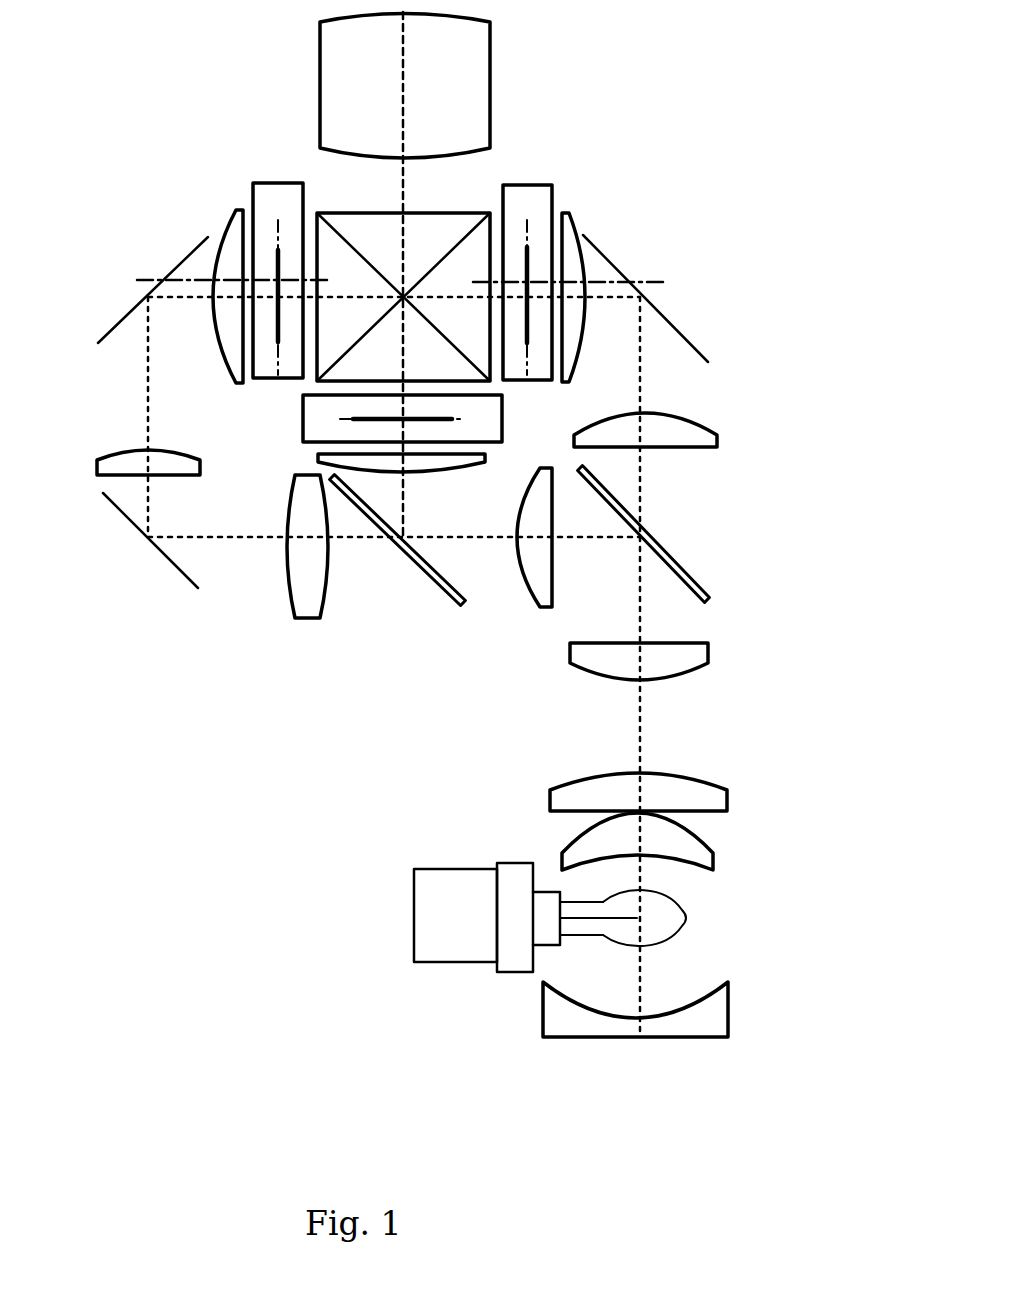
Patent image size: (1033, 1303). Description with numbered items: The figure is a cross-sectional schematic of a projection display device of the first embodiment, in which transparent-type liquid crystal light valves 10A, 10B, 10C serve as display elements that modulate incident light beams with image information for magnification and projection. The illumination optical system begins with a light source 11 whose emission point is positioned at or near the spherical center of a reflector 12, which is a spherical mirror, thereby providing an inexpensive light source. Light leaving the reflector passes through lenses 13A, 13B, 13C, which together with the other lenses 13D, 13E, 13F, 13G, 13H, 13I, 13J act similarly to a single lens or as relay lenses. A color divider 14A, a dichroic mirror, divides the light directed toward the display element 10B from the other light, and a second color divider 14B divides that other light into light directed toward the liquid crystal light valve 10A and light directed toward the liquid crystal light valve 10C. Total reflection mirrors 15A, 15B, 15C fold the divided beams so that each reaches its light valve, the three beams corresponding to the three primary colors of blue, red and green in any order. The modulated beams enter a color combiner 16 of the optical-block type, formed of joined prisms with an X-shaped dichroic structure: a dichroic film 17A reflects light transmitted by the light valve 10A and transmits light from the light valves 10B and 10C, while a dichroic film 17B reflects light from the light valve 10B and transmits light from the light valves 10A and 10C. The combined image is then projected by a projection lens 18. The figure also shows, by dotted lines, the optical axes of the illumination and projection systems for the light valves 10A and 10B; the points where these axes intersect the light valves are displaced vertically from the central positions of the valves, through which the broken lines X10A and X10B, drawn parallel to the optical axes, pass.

The projection lens 18 is at (485, 85).
The color combiner 16 is at (386, 232).
The dichroic film 17A is at (458, 235).
The dichroic film 17B is at (343, 234).
The transparent-type liquid crystal light valve 10A is at (288, 183).
The transparent-type liquid crystal light valve 10B is at (528, 185).
The transparent-type liquid crystal light valve 10C is at (303, 420).
The lens 13J is at (238, 210).
The lens 13E is at (570, 213).
The broken line through center of light valve 10A X10A is at (150, 280).
The broken line through center of light valve 10B X10B is at (645, 280).
The total reflection mirror 15A is at (680, 332).
The total reflection mirror 15B is at (165, 560).
The total reflection mirror 15C is at (112, 332).
The lens 13I is at (125, 455).
The lens 13D is at (697, 432).
The lens 13G is at (318, 460).
The lens 13H is at (305, 598).
The lens 13F is at (525, 593).
The lens 13C is at (700, 662).
The lens 13B is at (700, 790).
The lens 13A is at (705, 855).
The color divider 14A is at (690, 573).
The color divider 14B is at (447, 595).
The reflector 12 is at (690, 990).
The light source 11 is at (525, 963).